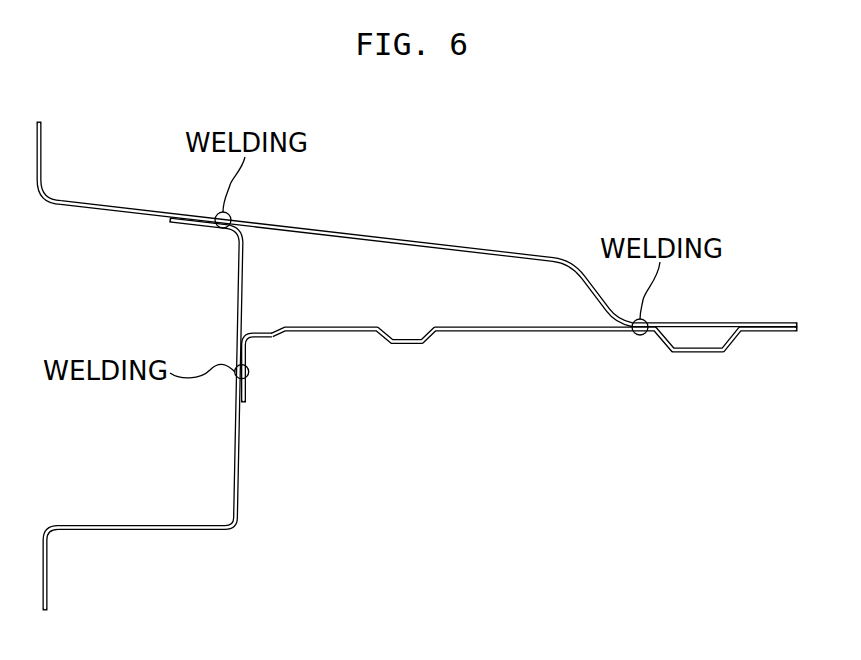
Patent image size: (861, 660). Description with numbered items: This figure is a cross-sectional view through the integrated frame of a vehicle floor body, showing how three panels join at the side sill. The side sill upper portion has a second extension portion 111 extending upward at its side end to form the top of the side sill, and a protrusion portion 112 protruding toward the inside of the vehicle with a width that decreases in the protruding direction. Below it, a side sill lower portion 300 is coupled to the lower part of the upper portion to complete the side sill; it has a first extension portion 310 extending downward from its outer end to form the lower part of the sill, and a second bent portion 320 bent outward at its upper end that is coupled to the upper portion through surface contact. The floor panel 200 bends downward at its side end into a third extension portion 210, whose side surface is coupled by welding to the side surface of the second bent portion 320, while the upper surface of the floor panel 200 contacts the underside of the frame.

The second extension portion 111 is at (45, 143).
The protrusion portion 112 is at (443, 242).
The floor panel 200 is at (568, 345).
The third extension portion 210 is at (250, 372).
The side sill lower portion 300 is at (243, 488).
The first extension portion 310 is at (48, 590).
The second bent portion 320 is at (219, 229).